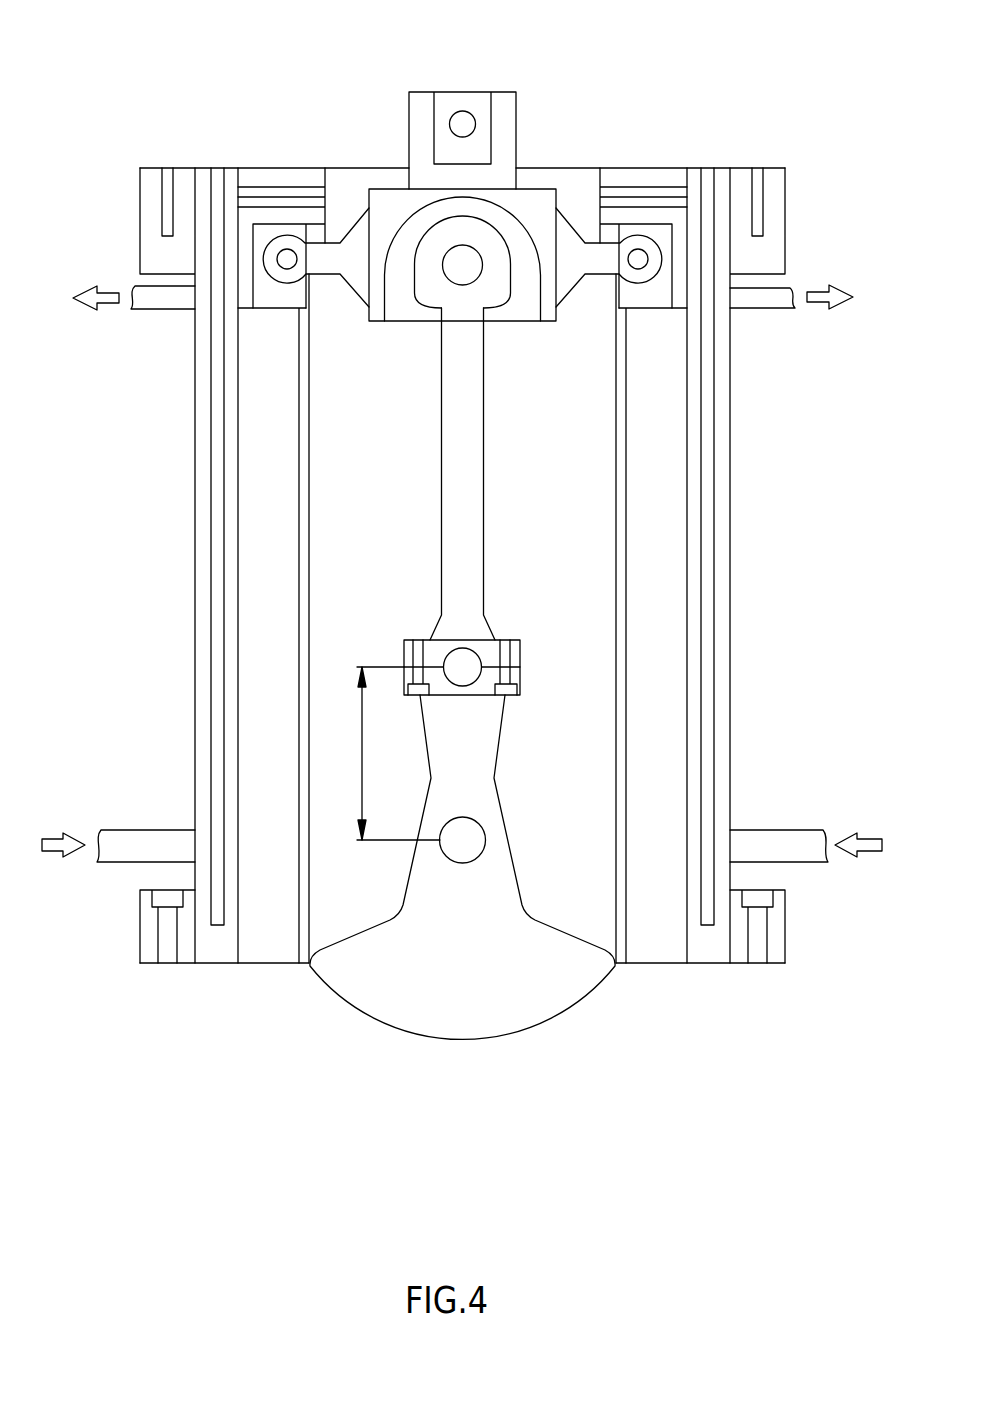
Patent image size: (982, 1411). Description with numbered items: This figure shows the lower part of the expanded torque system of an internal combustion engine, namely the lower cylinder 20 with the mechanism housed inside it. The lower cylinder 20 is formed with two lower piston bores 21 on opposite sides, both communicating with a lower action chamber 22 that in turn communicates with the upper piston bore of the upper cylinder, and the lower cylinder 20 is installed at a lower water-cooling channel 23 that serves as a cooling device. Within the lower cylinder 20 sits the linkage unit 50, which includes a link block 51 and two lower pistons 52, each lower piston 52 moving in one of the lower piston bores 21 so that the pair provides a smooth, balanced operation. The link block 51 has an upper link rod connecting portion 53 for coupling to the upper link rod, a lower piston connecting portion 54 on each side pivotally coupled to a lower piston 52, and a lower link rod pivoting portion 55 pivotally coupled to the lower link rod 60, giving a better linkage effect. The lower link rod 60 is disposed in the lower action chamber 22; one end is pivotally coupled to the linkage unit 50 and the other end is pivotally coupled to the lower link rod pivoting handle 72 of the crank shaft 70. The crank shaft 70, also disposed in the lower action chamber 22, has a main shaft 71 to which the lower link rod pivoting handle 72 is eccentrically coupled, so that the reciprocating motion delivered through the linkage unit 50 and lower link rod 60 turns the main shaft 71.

The lower cylinder 20 is at (462, 613).
The lower piston bore 21 is at (682, 251).
The lower action chamber 22 is at (628, 568).
The lower water-cooling channel 23 is at (707, 470).
The linkage unit 50 is at (458, 210).
The link block 51 is at (572, 316).
The lower piston 52 is at (256, 172).
The upper link rod connecting portion 53 is at (462, 124).
The lower piston connecting portion 54 is at (288, 258).
The lower link rod pivoting portion 55 is at (460, 267).
The lower link rod 60 is at (425, 534).
The crank shaft 70 is at (467, 853).
The main shaft 71 is at (468, 827).
The lower link rod pivoting handle 72 is at (460, 665).